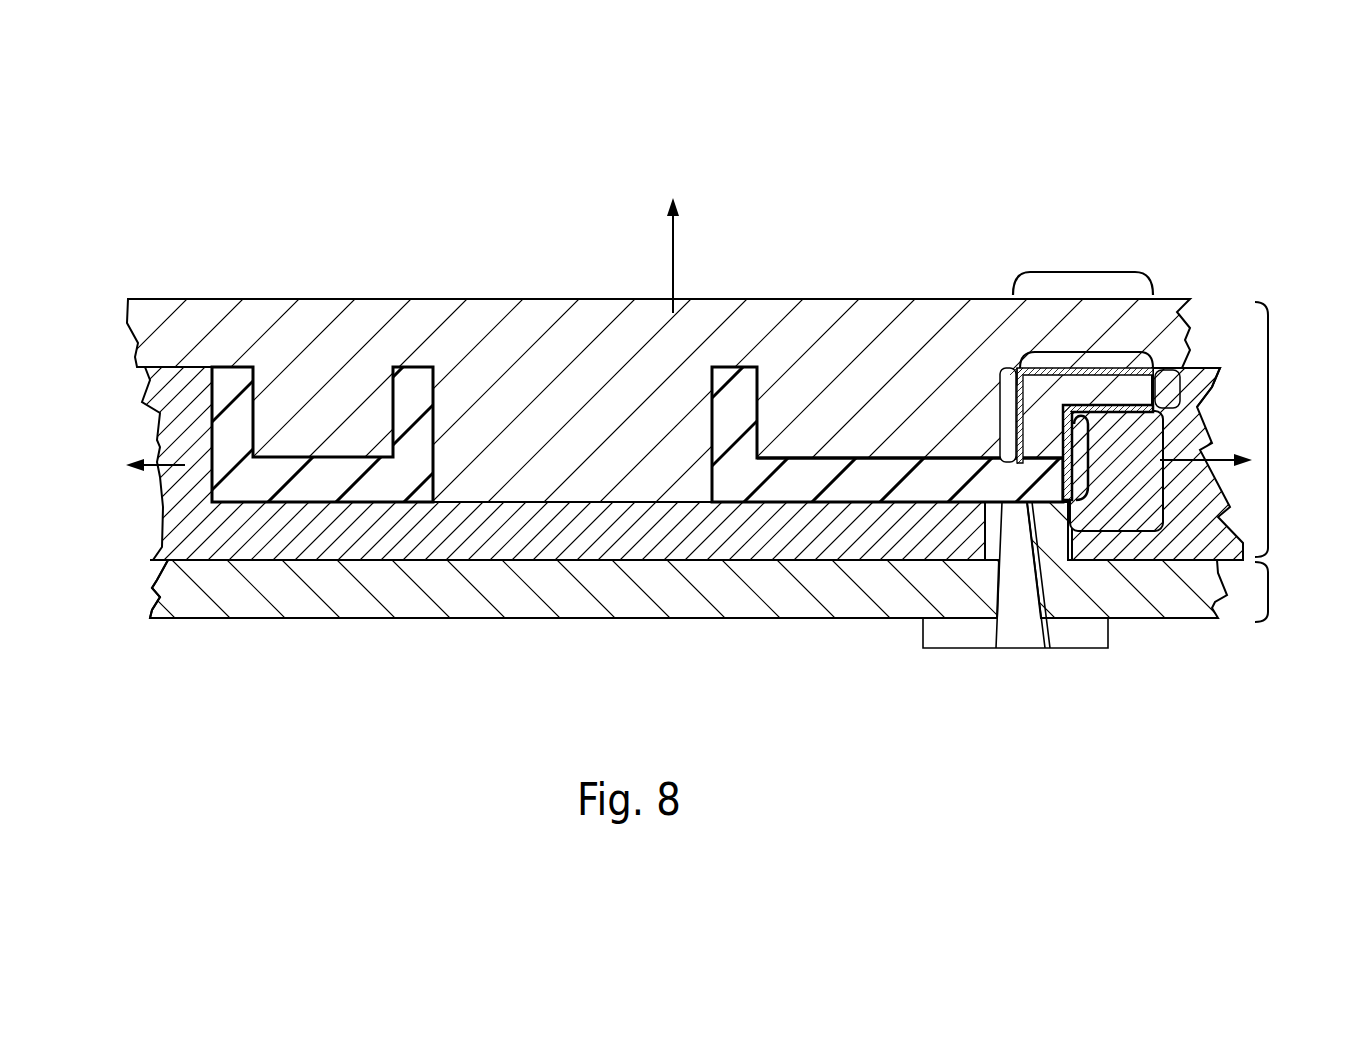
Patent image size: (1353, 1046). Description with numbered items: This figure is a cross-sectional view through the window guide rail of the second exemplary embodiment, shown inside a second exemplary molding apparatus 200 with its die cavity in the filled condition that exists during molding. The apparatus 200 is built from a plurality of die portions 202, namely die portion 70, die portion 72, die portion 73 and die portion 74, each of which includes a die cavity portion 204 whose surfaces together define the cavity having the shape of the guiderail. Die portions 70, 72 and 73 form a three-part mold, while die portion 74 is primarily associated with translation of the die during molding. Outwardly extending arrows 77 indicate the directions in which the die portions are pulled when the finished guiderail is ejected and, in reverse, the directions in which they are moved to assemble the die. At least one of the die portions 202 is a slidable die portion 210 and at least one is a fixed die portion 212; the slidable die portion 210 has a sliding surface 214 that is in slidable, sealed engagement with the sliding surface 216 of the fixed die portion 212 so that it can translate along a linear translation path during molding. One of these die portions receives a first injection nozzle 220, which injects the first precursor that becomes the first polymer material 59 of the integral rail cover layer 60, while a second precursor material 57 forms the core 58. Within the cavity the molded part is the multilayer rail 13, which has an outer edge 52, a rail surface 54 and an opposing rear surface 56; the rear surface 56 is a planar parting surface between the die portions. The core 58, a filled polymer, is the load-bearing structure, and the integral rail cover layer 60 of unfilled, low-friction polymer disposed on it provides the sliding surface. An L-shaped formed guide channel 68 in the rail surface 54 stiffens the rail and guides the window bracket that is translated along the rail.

The multilayer rail 13 is at (1085, 268).
The outer edge 52 is at (1182, 392).
The rail surface 54 is at (1090, 453).
The rear surface 56 is at (998, 408).
The second polymer material 57 is at (1020, 372).
The core 58 is at (917, 455).
The first polymer material 59 is at (1063, 463).
The integral rail cover layer 60 is at (1065, 365).
The formed guide channel 68 is at (1110, 531).
The die portion 70 is at (818, 320).
The die portion 72 is at (165, 414).
The die portion 73 is at (1203, 380).
The die portion 74 is at (350, 620).
The outwardly extending arrows 77 is at (673, 262).
The molding apparatus 200 is at (1180, 255).
The die portions 202 is at (270, 557).
The die cavity portions 204 is at (297, 460).
The slidable die portion 210 is at (1272, 388).
The fixed die portion 212 is at (1272, 605).
The sliding surface 214 is at (452, 507).
The sliding surface 216 is at (493, 498).
The first injection nozzle 220 is at (960, 643).